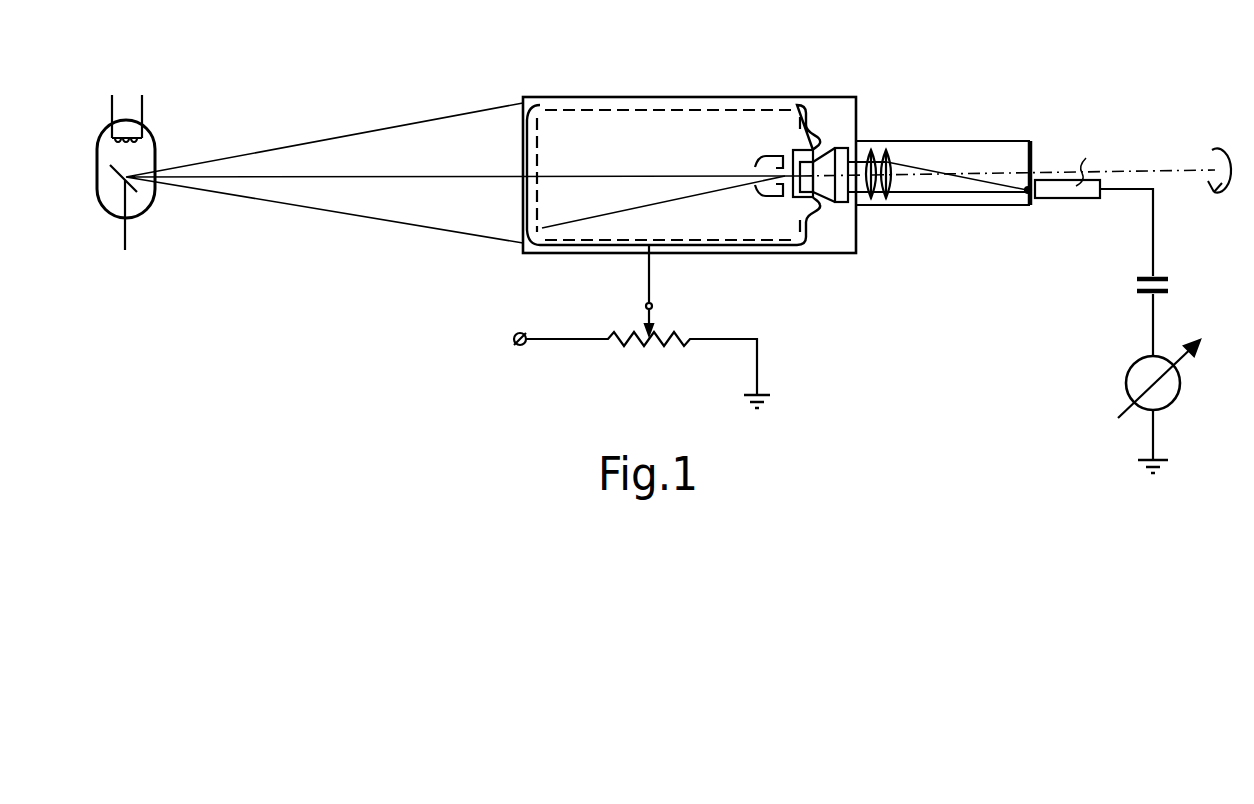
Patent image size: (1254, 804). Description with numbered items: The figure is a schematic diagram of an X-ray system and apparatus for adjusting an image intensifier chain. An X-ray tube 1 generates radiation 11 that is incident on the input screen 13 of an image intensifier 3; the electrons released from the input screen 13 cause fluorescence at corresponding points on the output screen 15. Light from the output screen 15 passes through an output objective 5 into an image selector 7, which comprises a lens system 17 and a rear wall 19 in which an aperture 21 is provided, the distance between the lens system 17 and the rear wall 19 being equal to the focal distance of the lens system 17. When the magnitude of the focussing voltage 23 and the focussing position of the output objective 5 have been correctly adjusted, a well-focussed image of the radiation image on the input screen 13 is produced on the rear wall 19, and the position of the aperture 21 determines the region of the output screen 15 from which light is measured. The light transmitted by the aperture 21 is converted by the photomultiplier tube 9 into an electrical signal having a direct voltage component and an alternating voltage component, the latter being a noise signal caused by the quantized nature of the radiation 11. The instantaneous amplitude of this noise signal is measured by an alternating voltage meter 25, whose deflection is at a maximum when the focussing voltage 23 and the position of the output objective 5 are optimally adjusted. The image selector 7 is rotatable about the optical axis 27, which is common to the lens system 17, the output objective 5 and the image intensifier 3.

The X-ray tube 1 is at (157, 139).
The image intensifier 3 is at (686, 128).
The output objective 5 is at (823, 147).
The image selector 7 is at (972, 140).
The photomultiplier tube 9 is at (1073, 196).
The radiation 11 is at (403, 125).
The input screen 13 is at (541, 147).
The output screen 15 is at (773, 155).
The lens system 17 is at (898, 183).
The rear wall 19 is at (1033, 158).
The aperture 21 is at (1036, 200).
The focussing voltage 23 is at (652, 294).
The alternating voltage meter 25 is at (1172, 382).
The optical axis 27 is at (1165, 170).